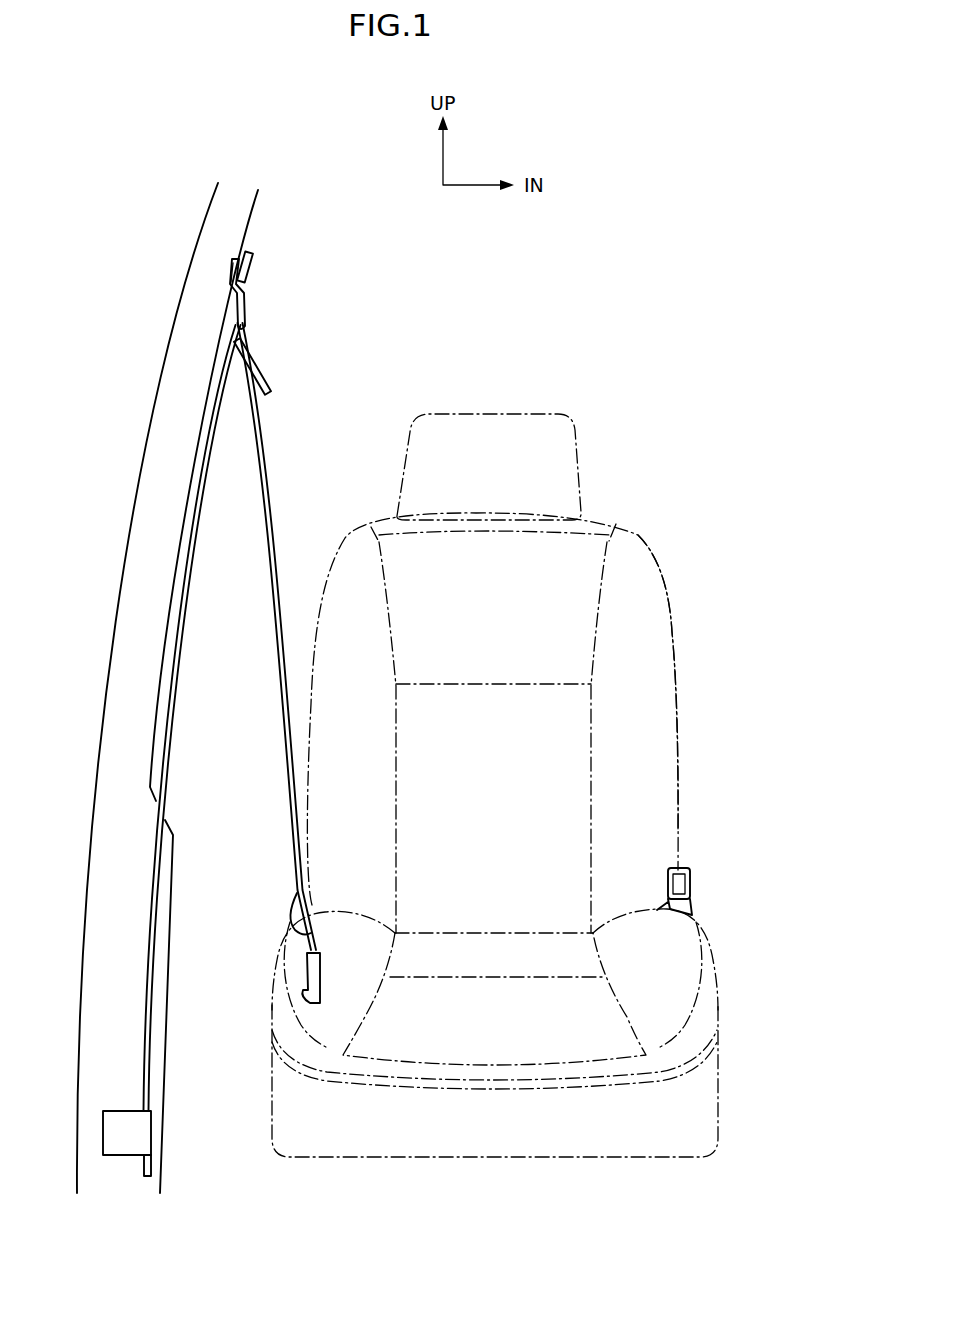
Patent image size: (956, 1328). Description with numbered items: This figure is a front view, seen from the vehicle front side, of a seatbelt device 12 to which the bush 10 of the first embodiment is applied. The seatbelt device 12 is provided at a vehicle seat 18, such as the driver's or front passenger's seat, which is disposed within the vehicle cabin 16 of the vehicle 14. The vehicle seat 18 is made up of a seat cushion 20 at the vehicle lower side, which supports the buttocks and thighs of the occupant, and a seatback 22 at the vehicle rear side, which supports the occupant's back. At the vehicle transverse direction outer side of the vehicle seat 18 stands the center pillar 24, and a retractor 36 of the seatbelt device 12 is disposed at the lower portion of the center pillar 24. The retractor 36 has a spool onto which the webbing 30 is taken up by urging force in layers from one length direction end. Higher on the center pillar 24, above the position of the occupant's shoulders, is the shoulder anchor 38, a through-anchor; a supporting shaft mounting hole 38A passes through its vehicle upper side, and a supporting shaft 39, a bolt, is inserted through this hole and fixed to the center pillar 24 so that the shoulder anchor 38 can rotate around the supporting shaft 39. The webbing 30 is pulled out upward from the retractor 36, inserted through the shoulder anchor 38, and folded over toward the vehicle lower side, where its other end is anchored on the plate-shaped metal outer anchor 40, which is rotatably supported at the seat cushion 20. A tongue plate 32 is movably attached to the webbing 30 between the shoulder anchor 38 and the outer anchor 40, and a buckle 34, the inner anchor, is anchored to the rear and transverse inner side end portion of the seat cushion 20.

The bush 10 is at (307, 970).
The seatbelt device 12 is at (269, 492).
The vehicle 14 is at (173, 162).
The vehicle cabin 16 is at (580, 284).
The vehicle seat 18 is at (633, 532).
The seat cushion 20 is at (719, 990).
The seatback 22 is at (673, 640).
The center pillar 24 is at (257, 202).
The webbing 30 is at (268, 580).
The tongue plate 32 is at (236, 360).
The buckle 34 is at (692, 884).
The retractor 36 is at (119, 1158).
The shoulder anchor 38 is at (244, 296).
The supporting shaft mounting hole 38A is at (229, 261).
The supporting shaft 39 is at (251, 265).
The outer anchor 40 is at (292, 938).